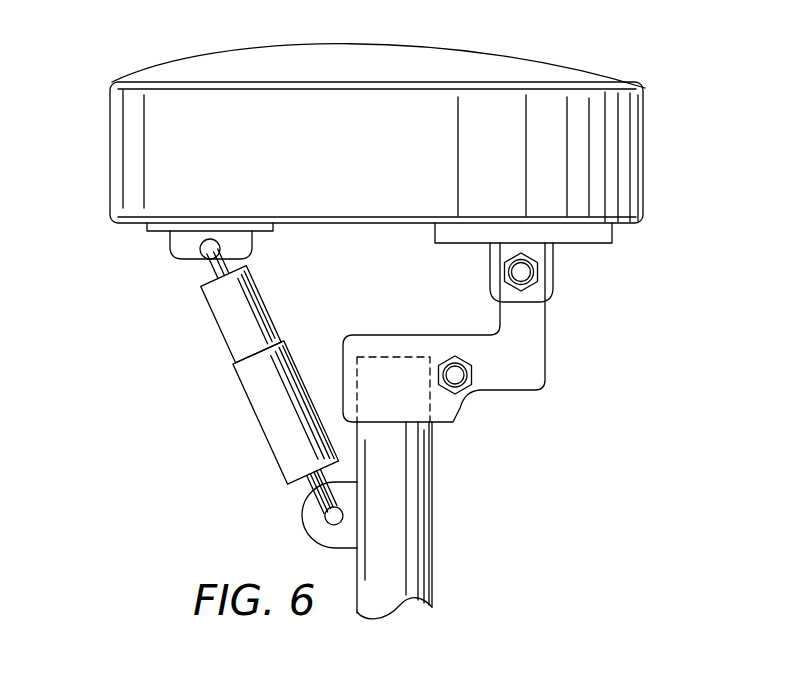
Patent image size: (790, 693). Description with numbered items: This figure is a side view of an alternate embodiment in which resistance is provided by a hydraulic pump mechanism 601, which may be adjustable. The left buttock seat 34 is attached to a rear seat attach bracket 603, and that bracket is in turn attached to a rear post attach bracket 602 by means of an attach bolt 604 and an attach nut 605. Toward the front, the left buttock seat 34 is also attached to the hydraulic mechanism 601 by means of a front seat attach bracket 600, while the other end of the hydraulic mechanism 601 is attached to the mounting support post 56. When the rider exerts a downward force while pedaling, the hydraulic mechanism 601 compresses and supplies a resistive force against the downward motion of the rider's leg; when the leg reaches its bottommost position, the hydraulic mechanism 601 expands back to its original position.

The left buttock seat 34 is at (603, 118).
The mounting support post 56 is at (432, 523).
The front seat attach bracket 600 is at (168, 243).
The hydraulic pump mechanism 601 is at (238, 330).
The rear post attach bracket 602 is at (545, 356).
The rear seat attach bracket 603 is at (553, 258).
The attach bolt 604 is at (521, 272).
The attach nut 605 is at (505, 272).